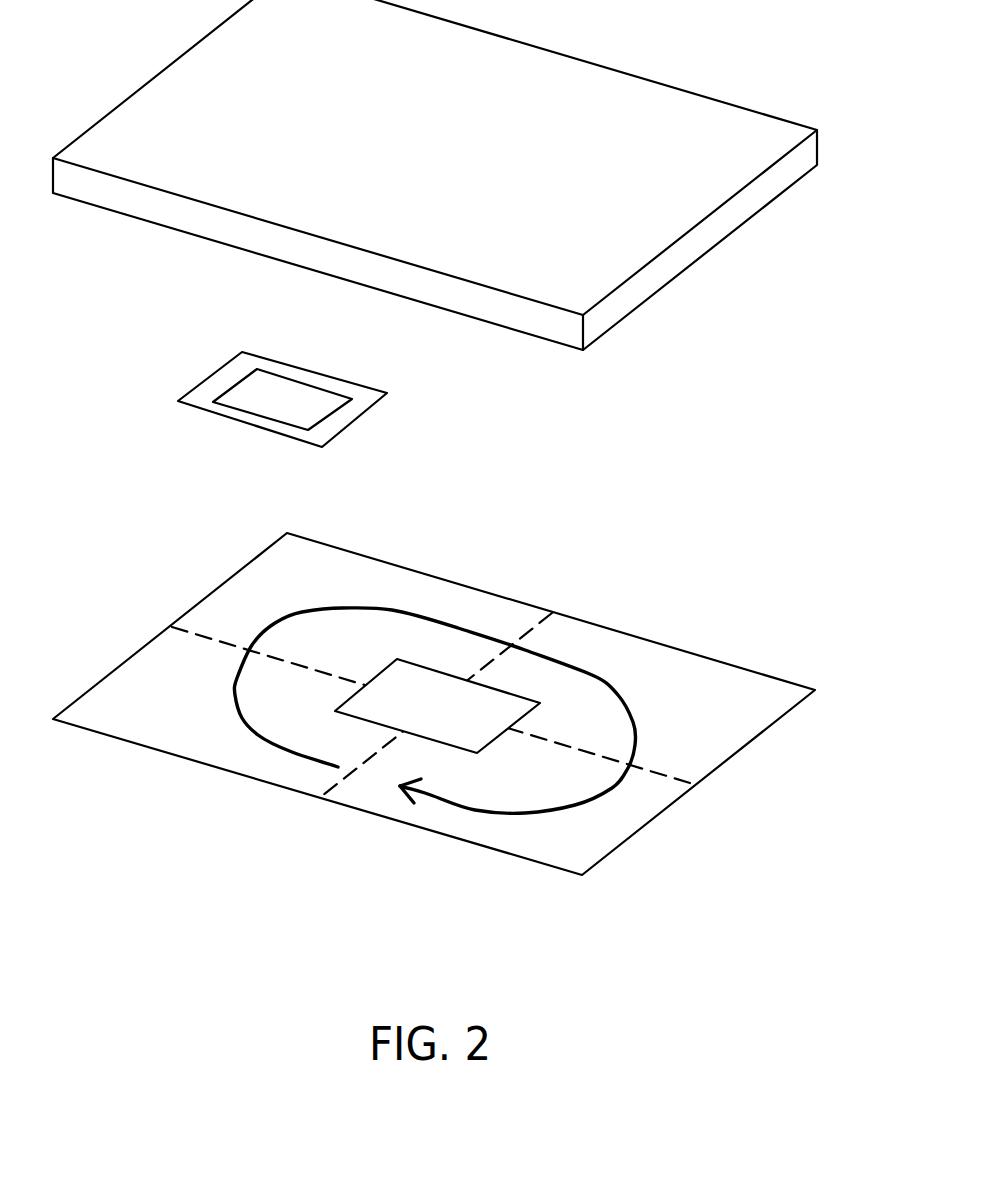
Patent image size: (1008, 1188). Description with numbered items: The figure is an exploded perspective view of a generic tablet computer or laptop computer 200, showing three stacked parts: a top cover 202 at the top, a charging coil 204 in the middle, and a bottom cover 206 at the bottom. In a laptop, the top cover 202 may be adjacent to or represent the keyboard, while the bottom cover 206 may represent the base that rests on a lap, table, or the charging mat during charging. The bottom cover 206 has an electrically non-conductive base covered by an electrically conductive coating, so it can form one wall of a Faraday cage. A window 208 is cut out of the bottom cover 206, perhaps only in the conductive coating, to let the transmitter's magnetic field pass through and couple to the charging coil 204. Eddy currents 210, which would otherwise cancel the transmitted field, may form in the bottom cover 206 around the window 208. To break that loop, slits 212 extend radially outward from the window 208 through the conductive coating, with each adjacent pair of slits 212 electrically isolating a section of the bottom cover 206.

The tablet computer or laptop computer 200 is at (444, 503).
The top cover 202 is at (727, 238).
The charging coil 204 is at (355, 422).
The bottom cover 206 is at (703, 742).
The window 208 is at (490, 745).
The eddy currents 210 is at (590, 672).
The slits 212 is at (515, 638).